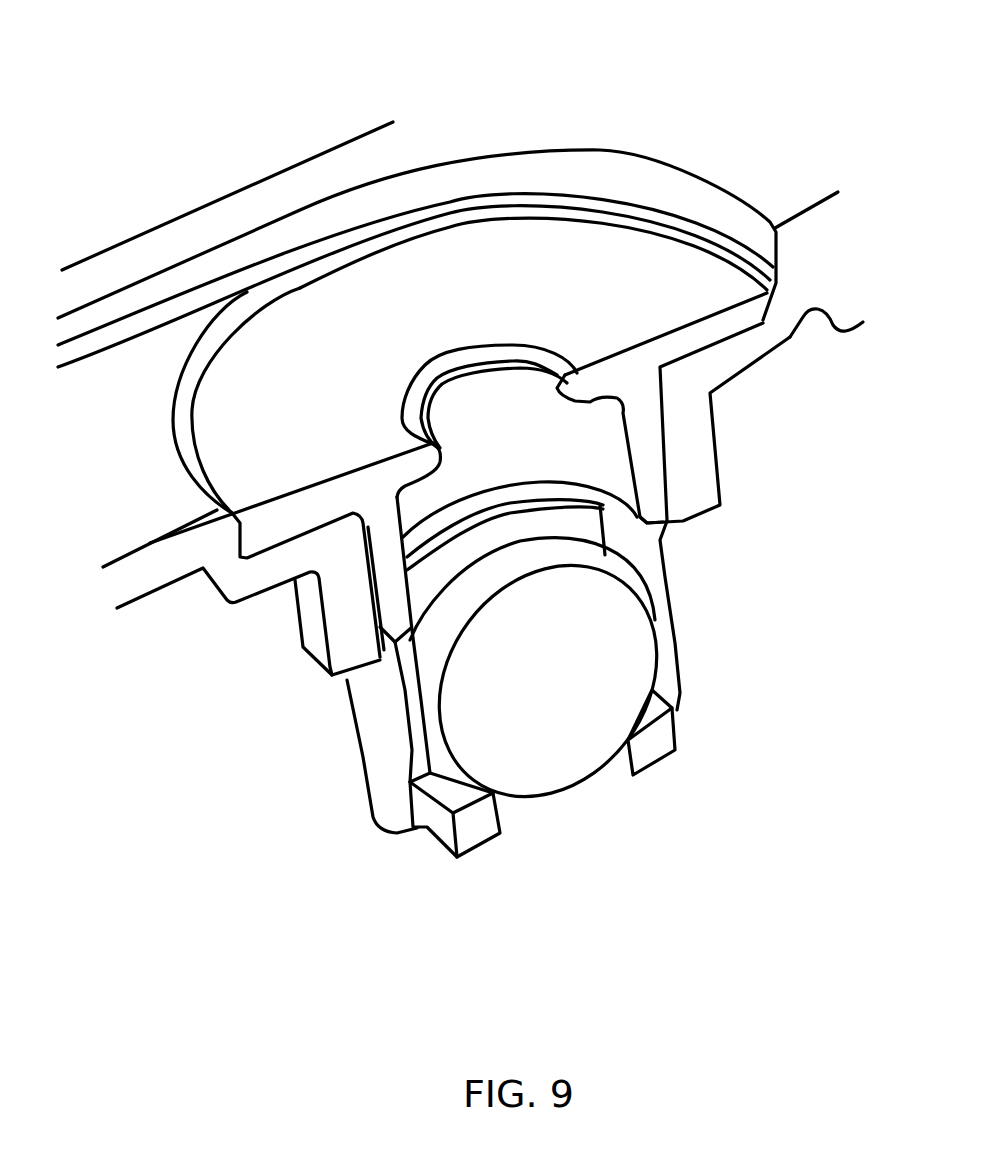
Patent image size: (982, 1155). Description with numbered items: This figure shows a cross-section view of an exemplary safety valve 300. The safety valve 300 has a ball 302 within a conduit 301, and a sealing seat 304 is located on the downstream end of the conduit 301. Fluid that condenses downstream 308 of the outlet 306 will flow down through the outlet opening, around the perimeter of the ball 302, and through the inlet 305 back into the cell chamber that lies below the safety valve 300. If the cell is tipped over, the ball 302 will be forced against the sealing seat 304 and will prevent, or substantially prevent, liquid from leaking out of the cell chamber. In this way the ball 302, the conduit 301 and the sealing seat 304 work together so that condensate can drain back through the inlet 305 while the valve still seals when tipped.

The safety valve 300 is at (270, 104).
The conduit 301 is at (640, 560).
The ball 302 is at (457, 712).
The sealing seat 304 is at (470, 505).
The inlet 305 is at (537, 812).
The outlet 306 is at (523, 397).
The downstream 308 is at (458, 350).